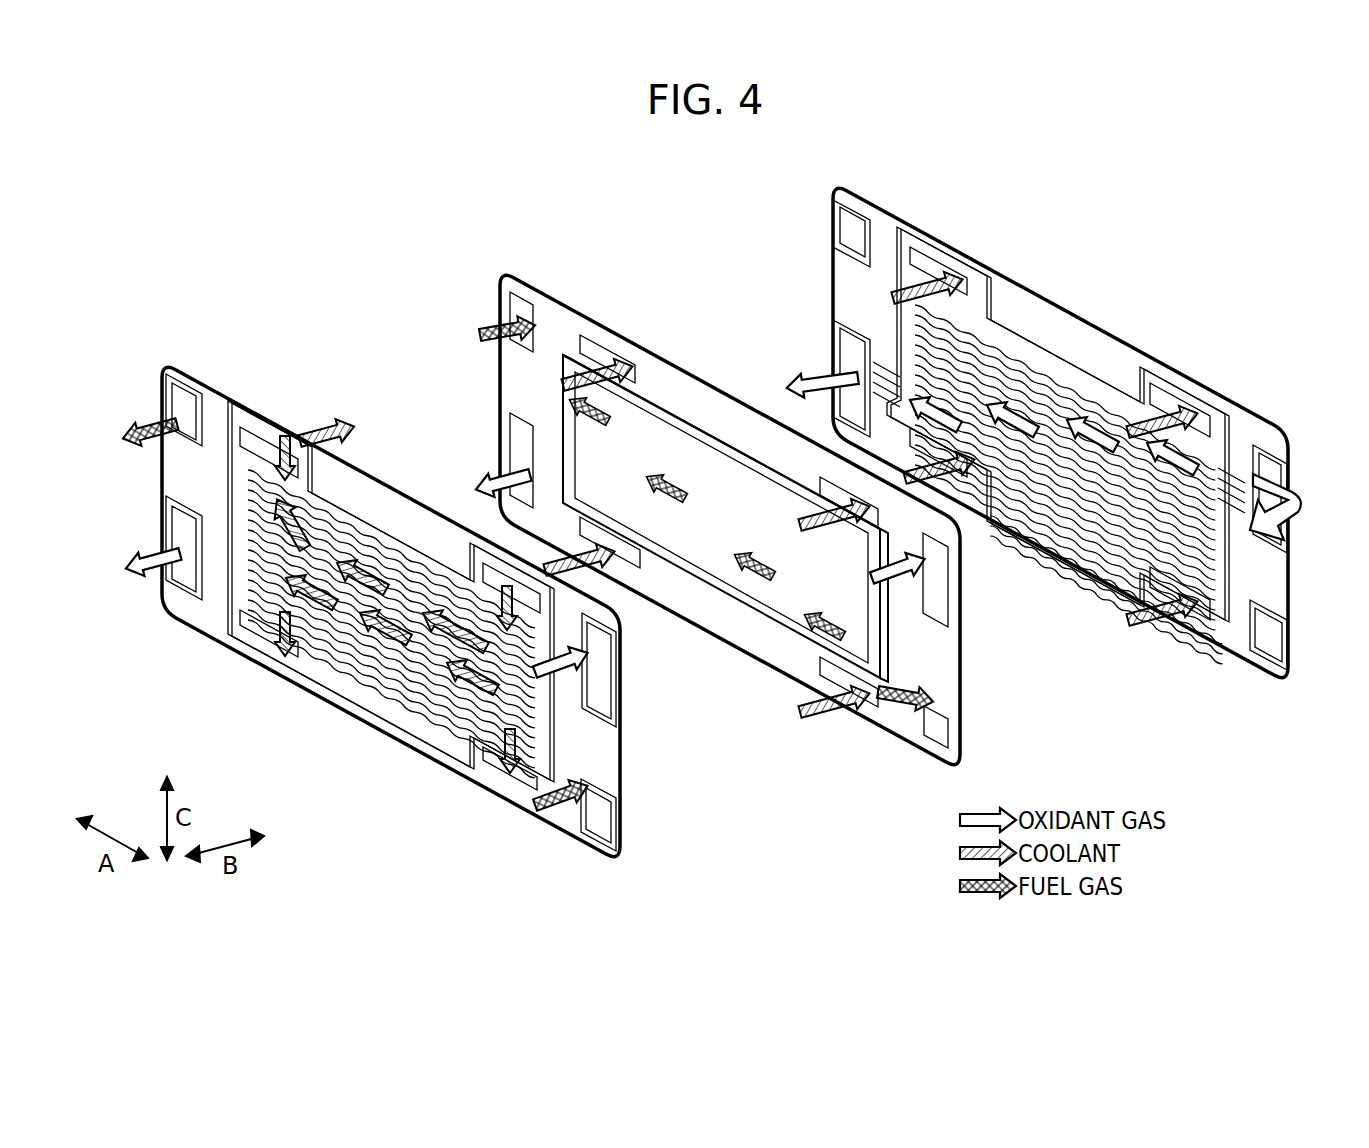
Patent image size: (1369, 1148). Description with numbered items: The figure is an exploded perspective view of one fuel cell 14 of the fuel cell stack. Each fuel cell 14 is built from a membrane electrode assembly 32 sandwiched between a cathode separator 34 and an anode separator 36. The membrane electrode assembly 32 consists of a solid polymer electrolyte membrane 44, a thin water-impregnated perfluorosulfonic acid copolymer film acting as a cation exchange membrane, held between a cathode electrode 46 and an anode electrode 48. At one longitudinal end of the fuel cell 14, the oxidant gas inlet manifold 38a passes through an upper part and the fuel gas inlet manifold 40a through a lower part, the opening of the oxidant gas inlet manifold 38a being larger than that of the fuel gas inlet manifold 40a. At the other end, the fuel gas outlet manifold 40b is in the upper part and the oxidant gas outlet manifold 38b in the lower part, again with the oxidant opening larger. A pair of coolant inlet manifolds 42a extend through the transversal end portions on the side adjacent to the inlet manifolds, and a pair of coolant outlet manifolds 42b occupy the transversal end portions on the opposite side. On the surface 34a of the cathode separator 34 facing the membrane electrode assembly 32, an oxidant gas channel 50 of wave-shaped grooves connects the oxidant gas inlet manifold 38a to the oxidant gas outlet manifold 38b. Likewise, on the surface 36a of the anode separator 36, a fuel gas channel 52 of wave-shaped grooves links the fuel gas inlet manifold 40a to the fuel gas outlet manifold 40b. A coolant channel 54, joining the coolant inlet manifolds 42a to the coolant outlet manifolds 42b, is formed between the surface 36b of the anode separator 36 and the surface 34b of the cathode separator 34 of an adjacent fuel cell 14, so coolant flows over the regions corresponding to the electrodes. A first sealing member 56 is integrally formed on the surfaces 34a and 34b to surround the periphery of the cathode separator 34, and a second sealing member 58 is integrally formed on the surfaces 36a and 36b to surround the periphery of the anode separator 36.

The fuel cell 14 is at (320, 216).
The membrane electrode assembly 32 is at (519, 266).
The cathode separator 34 is at (888, 198).
The surface of the cathode separator 34a is at (1100, 548).
The surface of the cathode separator 34b is at (1113, 557).
The anode separator 36 is at (183, 360).
The surface of the anode separator 36a is at (444, 737).
The surface of the anode separator 36b is at (430, 748).
The oxidant gas inlet manifold 38a is at (614, 665).
The oxidant gas outlet manifold 38b is at (187, 590).
The fuel gas inlet manifold 40a is at (615, 818).
The fuel gas outlet manifold 40b is at (190, 408).
The coolant inlet manifold 42a is at (500, 770).
The coolant outlet manifold 42b is at (263, 443).
The solid polymer electrolyte membrane 44 is at (927, 752).
The cathode electrode 46 is at (698, 458).
The anode electrode 48 is at (771, 600).
The oxidant gas channel 50 is at (1033, 538).
The fuel gas channel 52 is at (337, 520).
The coolant channel 54 is at (370, 648).
The first sealing member 56 is at (1008, 327).
The second sealing member 58 is at (248, 410).